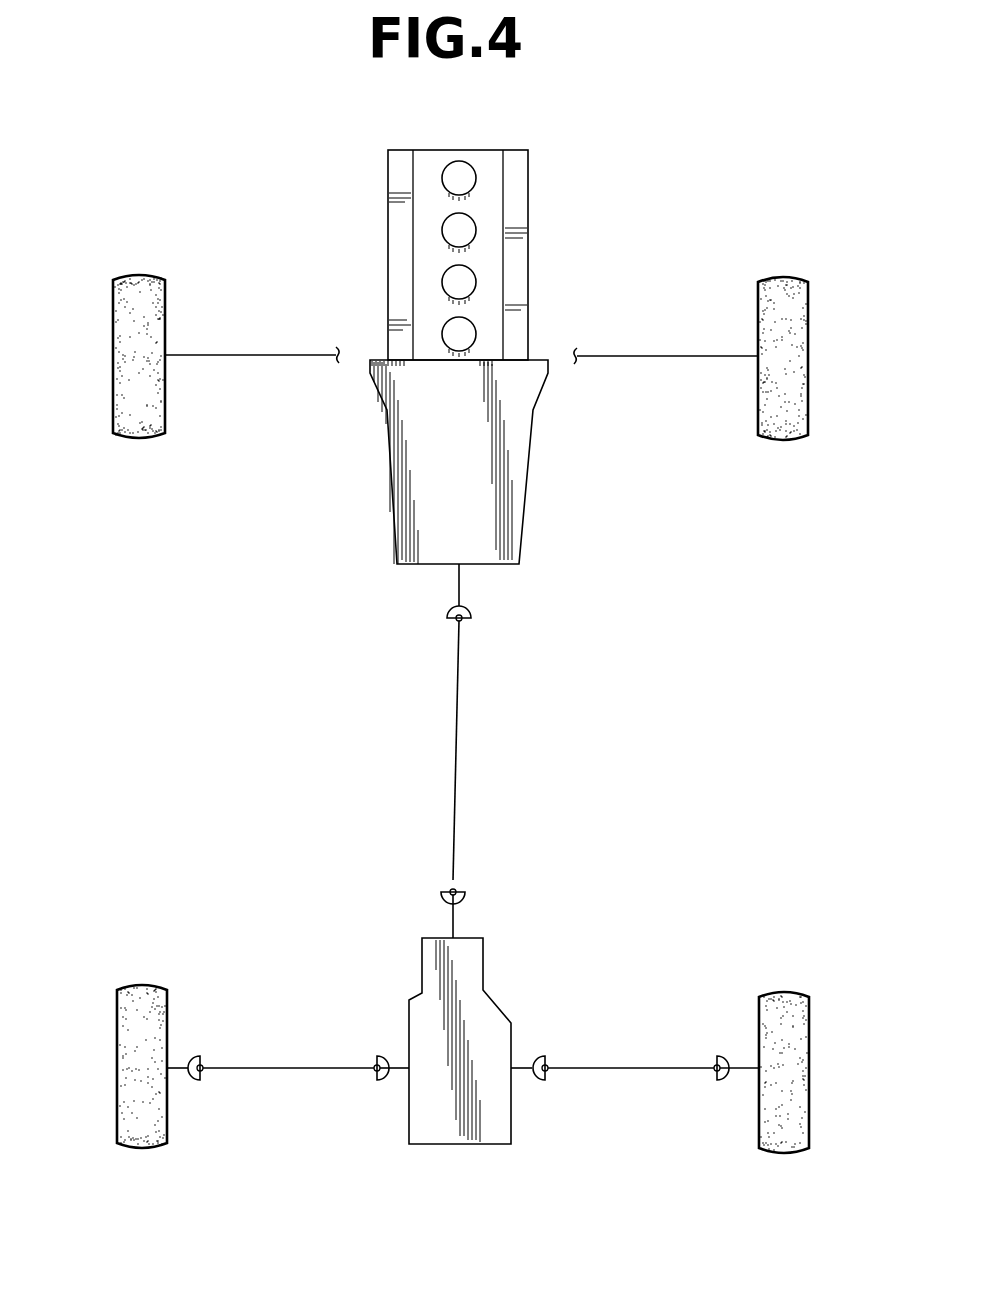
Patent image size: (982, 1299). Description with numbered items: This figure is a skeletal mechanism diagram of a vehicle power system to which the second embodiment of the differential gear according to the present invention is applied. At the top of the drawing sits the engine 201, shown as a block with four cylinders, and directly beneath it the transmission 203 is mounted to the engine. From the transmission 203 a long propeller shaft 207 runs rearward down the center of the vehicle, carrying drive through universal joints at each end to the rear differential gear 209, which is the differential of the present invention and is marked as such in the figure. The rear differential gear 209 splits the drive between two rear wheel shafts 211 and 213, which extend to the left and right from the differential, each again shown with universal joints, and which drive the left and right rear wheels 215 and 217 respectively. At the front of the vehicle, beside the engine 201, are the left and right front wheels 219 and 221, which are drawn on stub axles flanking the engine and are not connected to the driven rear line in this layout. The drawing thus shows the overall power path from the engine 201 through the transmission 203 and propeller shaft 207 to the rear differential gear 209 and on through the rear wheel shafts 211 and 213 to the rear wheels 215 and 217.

The engine 201 is at (518, 198).
The transmission 203 is at (508, 483).
The propeller shaft 207 is at (460, 745).
The rear differential gear 209 is at (481, 1028).
The rear wheel shaft 211 is at (303, 1071).
The rear wheel shaft 213 is at (650, 1073).
The left rear wheel 215 is at (125, 1038).
The right rear wheel 217 is at (795, 1013).
The left front wheel 219 is at (125, 336).
The right front wheel 221 is at (795, 318).